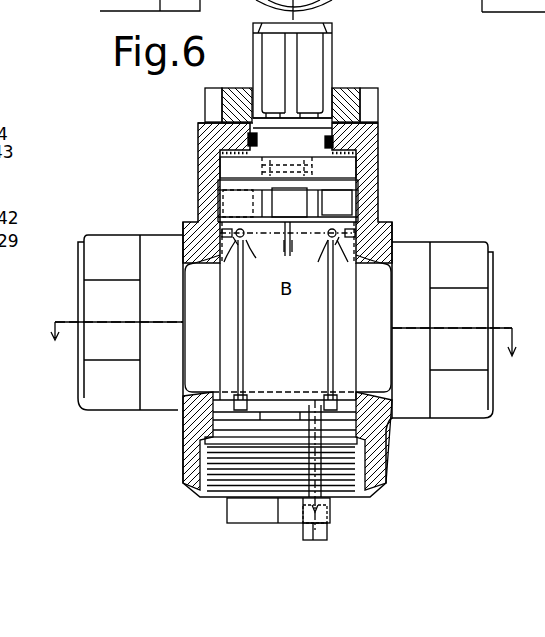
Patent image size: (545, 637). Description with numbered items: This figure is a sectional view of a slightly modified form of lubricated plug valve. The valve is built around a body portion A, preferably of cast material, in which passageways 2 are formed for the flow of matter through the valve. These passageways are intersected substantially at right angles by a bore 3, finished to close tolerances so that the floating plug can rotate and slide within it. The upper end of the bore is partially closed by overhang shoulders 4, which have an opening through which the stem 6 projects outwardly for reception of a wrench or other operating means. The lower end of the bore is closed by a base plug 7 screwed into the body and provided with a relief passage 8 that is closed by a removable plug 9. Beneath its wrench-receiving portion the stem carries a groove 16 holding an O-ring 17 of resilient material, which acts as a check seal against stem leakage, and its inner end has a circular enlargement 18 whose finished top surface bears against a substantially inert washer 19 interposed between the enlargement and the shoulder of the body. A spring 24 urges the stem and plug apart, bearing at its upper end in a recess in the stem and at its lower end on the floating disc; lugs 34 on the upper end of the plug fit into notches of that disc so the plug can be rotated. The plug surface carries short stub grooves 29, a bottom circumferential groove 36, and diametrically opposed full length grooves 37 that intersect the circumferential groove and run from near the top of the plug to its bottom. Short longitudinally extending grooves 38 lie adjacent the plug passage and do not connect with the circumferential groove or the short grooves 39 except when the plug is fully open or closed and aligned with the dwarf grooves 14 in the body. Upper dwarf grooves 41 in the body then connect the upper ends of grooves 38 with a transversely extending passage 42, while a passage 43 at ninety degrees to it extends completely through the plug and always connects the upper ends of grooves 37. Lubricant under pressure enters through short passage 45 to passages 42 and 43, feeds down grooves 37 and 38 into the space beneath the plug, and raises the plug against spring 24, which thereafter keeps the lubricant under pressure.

The passageways 2 is at (283, 326).
The bore 3 is at (378, 166).
The overhang shoulders 4 is at (250, 139).
The stem 6 is at (333, 66).
The base plug 7 is at (228, 512).
The relief passage 8 is at (330, 22).
The removable plug 9 is at (328, 533).
The dwarf grooves 14 is at (245, 400).
The groove 16 is at (210, 120).
The O-ring 17 is at (362, 126).
The circular enlargement 18 is at (288, 169).
The inert washer 19 is at (378, 152).
The spring 24 is at (322, 172).
The short stub grooves 29 is at (196, 222).
The lugs 34 is at (288, 205).
The bottom circumferential groove 36 is at (310, 408).
The full length grooves 37 is at (328, 327).
The short longitudinally extending grooves 38 is at (239, 330).
The short grooves 39 is at (327, 423).
The upper dwarf grooves 41 is at (246, 244).
The transversely extending passage 42 is at (237, 250).
The passage 43 is at (350, 262).
The short passage 45 is at (287, 241).
The body portion A is at (379, 216).